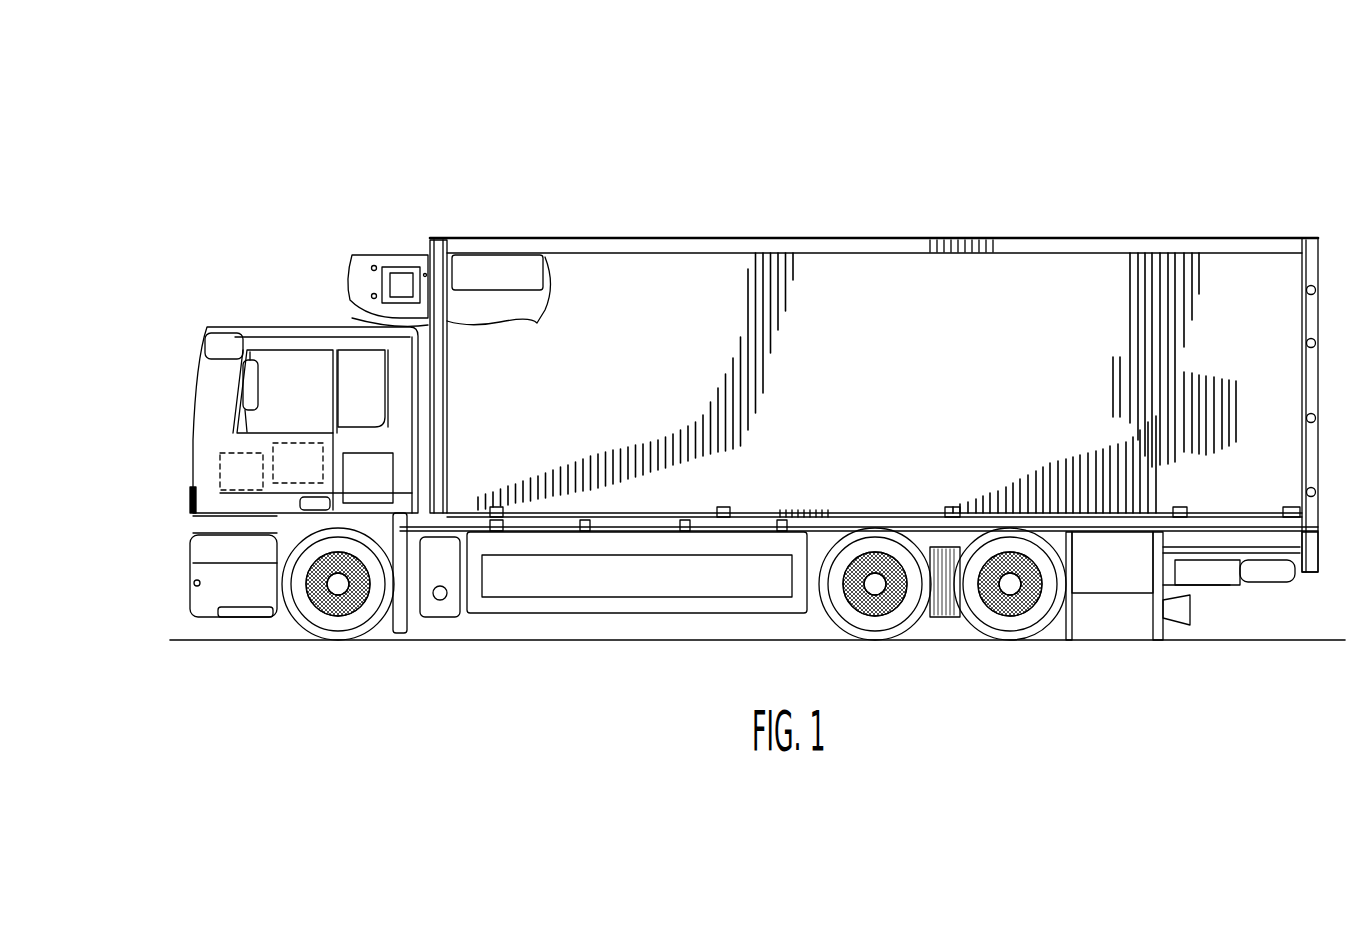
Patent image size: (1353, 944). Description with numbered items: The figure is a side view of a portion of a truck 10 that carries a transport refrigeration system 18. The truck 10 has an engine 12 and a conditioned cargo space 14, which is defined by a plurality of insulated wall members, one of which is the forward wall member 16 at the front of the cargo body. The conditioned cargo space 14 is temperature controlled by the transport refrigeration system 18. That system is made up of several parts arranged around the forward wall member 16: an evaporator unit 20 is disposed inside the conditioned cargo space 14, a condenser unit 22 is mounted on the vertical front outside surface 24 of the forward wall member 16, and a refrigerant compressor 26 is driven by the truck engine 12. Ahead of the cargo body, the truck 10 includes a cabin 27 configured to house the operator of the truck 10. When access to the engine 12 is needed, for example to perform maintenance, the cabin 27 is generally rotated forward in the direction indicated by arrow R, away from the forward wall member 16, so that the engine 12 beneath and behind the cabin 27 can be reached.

The truck 10 is at (278, 86).
The engine 12 is at (298, 463).
The conditioned cargo space 14 is at (492, 316).
The forward wall member 16 is at (434, 238).
The transport refrigeration system 18 is at (404, 188).
The evaporator unit 20 is at (508, 276).
The condenser unit 22 is at (362, 236).
The vertical front outside surface 24 is at (420, 326).
The refrigerant compressor 26 is at (241, 472).
The cabin 27 is at (186, 428).
The arrow R is at (180, 325).